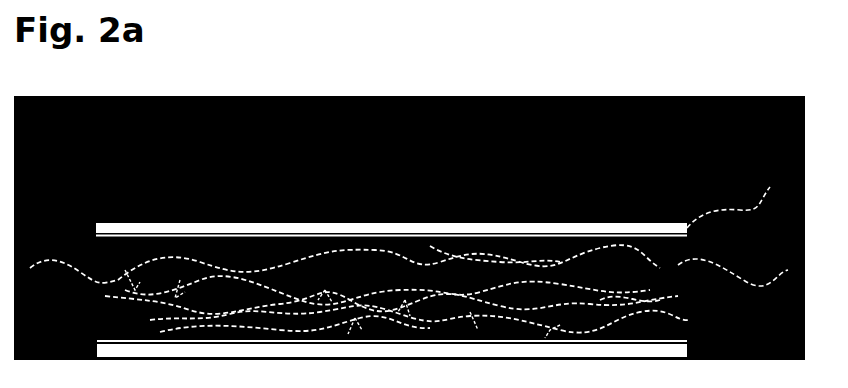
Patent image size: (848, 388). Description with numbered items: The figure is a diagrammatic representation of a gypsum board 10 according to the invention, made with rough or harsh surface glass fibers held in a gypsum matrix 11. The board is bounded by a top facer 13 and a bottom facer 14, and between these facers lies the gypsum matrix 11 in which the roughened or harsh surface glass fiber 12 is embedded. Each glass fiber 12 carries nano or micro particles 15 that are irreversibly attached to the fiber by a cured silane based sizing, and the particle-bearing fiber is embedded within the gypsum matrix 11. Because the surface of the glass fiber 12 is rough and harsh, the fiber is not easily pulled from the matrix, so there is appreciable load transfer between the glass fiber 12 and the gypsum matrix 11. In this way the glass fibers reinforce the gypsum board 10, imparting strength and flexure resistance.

The gypsum board 10 is at (578, 175).
The gypsum matrix 11 is at (742, 272).
The roughened or harsh surface glass fiber 12 is at (104, 233).
The top facer 13 is at (690, 357).
The bottom facer 14 is at (735, 199).
The nano or micro particles 15 is at (351, 291).